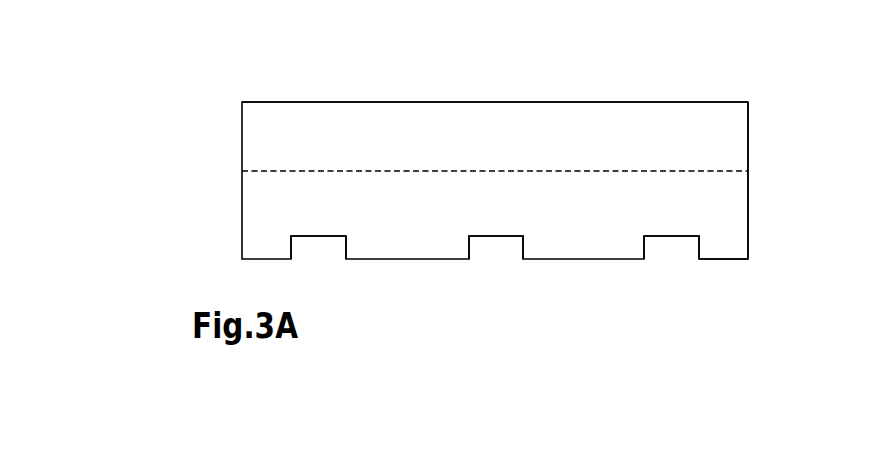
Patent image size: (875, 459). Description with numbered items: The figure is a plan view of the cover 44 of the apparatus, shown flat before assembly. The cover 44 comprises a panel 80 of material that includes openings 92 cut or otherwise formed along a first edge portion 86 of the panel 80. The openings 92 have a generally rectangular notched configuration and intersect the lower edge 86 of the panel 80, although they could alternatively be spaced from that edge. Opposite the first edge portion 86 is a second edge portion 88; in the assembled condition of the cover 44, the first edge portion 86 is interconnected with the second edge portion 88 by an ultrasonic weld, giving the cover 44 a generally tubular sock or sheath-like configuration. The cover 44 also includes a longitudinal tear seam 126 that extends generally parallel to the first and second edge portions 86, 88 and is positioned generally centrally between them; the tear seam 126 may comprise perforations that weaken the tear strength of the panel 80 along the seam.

The cover 44 is at (210, 157).
The panel 80 is at (599, 115).
The second edge portion 88 is at (735, 100).
The tear seam 126 is at (722, 170).
The first edge portion 86 is at (711, 258).
The openings 92 is at (332, 257).